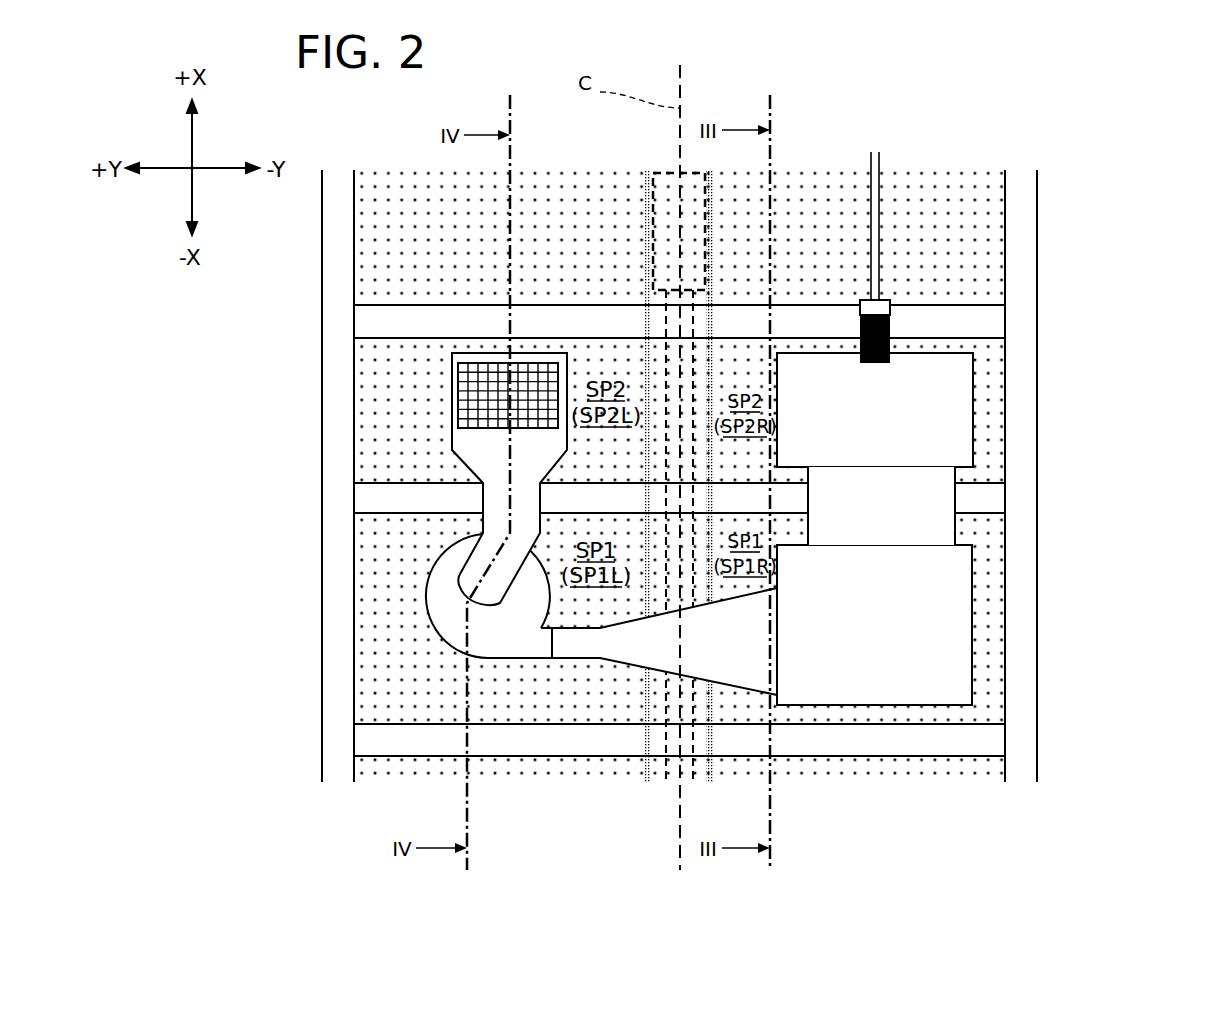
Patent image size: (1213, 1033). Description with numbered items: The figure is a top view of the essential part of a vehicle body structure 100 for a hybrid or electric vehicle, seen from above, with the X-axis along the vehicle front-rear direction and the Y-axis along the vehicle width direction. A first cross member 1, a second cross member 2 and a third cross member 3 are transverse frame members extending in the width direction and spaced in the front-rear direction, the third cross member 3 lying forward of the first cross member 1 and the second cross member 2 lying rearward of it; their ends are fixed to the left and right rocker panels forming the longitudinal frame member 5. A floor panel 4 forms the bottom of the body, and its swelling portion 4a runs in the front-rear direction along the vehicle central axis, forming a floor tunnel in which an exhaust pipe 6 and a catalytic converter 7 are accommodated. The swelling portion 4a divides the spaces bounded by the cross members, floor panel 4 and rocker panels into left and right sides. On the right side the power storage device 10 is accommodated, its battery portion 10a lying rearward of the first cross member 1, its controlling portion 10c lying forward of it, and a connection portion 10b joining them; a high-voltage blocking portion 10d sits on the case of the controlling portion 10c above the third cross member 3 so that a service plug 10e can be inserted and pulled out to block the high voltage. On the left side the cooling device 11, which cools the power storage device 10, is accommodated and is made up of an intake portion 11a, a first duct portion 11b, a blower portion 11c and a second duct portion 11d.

The vehicle body structure 100 is at (1080, 150).
The first cross member 1 is at (385, 497).
The second cross member 2 is at (387, 741).
The third cross member 3 is at (385, 325).
The floor panel 4 is at (907, 247).
The swelling portion 4a is at (648, 702).
The longitudinal frame member 5 is at (338, 770).
The exhaust pipe 6 is at (660, 717).
The catalytic converter 7 is at (650, 185).
The power storage device 10 is at (995, 468).
The battery portion 10a is at (950, 625).
The connection portion 10b is at (937, 512).
The controlling portion 10c is at (952, 382).
The high-voltage blocking portion 10d is at (1004, 339).
The service plug 10e is at (890, 310).
The cooling device 11 is at (466, 534).
The intake portion 11a is at (497, 508).
The first duct portion 11b is at (478, 432).
The blower portion 11c is at (425, 602).
The second duct portion 11d is at (643, 649).